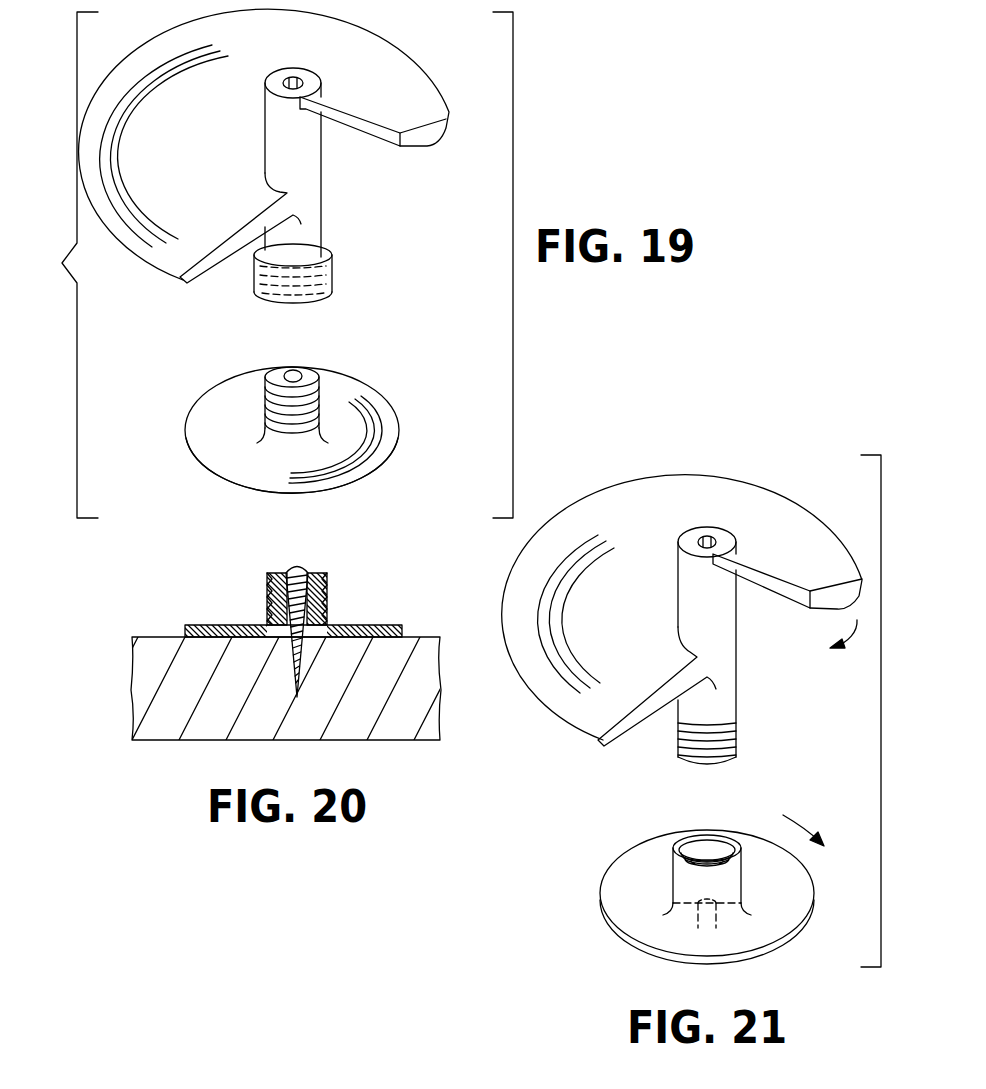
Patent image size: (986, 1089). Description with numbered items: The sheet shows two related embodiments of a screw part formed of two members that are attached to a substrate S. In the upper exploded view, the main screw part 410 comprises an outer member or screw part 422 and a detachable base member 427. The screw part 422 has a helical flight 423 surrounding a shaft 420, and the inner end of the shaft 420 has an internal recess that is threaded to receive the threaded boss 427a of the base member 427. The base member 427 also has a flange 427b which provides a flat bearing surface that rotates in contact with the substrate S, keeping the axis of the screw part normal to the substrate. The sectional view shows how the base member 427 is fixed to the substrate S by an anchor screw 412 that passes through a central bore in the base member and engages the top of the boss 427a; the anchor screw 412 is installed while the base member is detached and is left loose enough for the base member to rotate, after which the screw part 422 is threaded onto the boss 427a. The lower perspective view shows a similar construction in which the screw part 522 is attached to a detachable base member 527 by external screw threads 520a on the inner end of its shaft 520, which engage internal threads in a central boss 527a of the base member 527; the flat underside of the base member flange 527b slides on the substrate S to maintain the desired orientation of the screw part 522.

In FIG. 19, the main screw part 410 is at (258, 265).
In FIG. 19, the helical flight 423 is at (388, 42).
In FIG. 19, the shaft 420 is at (323, 195).
In FIG. 19, the screw part 422 is at (287, 156).
In FIG. 19, the base member 427 is at (340, 432).
In FIG. 19, the threaded boss 427a is at (303, 373).
In FIG. 20, the threaded boss 427a is at (320, 572).
In FIG. 19, the flange 427b is at (389, 479).
In FIG. 20, the flange 427b is at (360, 625).
In FIG. 20, the anchor screw 412 is at (290, 565).
In FIG. 20, the substrate S is at (163, 643).
In FIG. 21, the screw part 522 is at (682, 584).
In FIG. 21, the shaft 520 is at (764, 647).
In FIG. 21, the external screw threads 520a is at (739, 738).
In FIG. 21, the base member 527 is at (692, 887).
In FIG. 21, the central boss 527a is at (720, 833).
In FIG. 21, the base member flange 527b is at (780, 915).